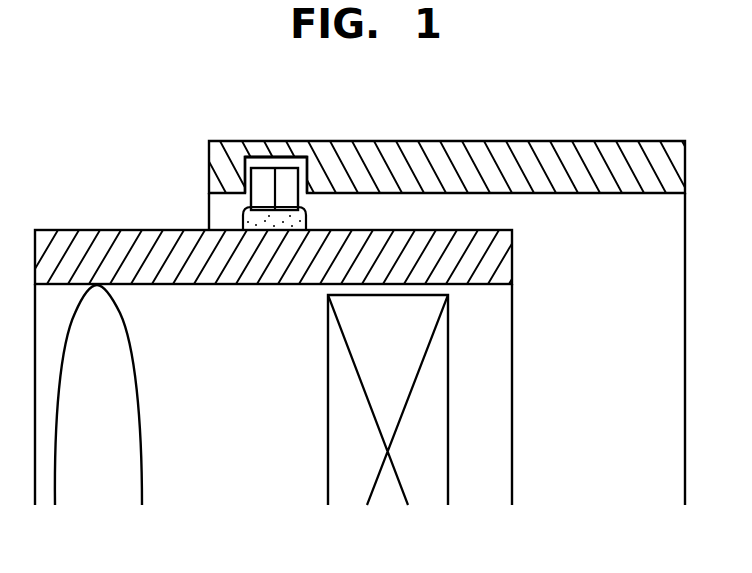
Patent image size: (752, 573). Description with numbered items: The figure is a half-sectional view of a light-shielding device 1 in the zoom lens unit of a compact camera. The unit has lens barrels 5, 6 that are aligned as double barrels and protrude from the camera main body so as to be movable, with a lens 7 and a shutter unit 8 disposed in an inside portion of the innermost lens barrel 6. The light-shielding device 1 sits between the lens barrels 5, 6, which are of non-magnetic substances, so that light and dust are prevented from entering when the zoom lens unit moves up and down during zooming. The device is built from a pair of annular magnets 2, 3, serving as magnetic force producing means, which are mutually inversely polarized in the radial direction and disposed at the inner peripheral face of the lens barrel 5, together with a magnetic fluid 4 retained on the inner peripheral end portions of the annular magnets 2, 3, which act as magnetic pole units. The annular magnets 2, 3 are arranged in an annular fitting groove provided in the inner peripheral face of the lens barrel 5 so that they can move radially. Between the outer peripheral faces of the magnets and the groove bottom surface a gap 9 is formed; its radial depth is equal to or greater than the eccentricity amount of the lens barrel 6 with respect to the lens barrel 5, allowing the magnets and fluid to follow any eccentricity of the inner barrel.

The light-shielding device 1 is at (292, 143).
The annular magnet 2 is at (249, 150).
The annular magnet 3 is at (289, 165).
The magnetic fluid 4 is at (307, 211).
The lens barrel 5 is at (416, 149).
The lens barrel 6 is at (140, 230).
The lens 7 is at (122, 378).
The shutter unit 8 is at (338, 430).
The gap 9 is at (272, 161).